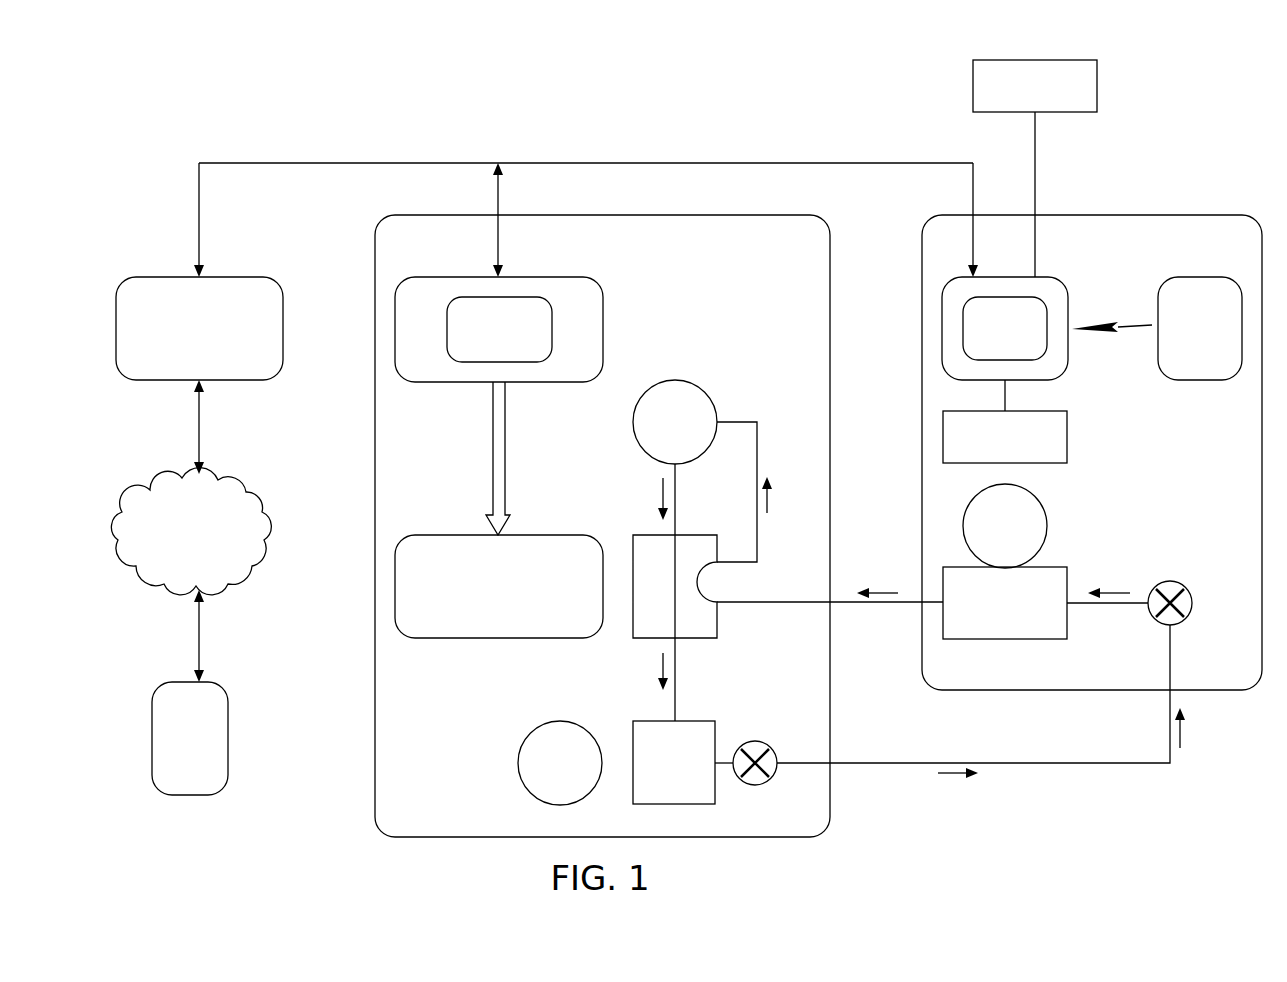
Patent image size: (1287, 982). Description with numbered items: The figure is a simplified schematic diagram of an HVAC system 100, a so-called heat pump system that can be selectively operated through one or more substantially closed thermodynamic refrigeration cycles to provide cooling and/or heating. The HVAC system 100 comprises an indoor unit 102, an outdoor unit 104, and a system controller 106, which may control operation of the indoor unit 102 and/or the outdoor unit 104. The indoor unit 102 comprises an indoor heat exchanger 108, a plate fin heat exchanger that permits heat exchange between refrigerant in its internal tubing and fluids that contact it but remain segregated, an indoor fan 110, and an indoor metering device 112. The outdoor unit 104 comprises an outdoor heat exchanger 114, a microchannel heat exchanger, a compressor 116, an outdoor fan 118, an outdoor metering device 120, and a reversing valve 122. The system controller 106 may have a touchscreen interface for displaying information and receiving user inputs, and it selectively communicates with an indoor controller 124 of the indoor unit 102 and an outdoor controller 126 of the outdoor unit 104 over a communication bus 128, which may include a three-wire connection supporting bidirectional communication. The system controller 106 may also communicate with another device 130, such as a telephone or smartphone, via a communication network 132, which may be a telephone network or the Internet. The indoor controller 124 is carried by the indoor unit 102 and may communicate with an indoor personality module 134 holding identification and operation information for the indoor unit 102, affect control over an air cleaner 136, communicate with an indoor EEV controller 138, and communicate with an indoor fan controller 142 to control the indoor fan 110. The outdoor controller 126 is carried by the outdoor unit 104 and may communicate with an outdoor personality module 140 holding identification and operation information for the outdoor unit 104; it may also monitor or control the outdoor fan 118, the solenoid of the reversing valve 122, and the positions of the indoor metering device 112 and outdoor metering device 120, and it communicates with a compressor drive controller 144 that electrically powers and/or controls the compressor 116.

The HVAC system 100 is at (346, 104).
The indoor unit 102 is at (1178, 206).
The outdoor unit 104 is at (366, 270).
The system controller 106 is at (180, 342).
The indoor heat exchanger 108 is at (986, 615).
The indoor fan 110 is at (986, 538).
The indoor metering device 112 is at (1186, 620).
The outdoor heat exchanger 114 is at (655, 775).
The compressor 116 is at (656, 434).
The outdoor fan 118 is at (541, 775).
The outdoor metering device 120 is at (771, 779).
The reversing valve 122 is at (717, 618).
The indoor controller 124 is at (1068, 308).
The outdoor controller 126 is at (448, 276).
The communication bus 128 is at (587, 162).
The other device 130 is at (180, 558).
The communication network 132 is at (171, 784).
The indoor personality module 134 is at (986, 342).
The air cleaner 136 is at (1016, 100).
The indoor EEV controller 138 is at (1181, 342).
The outdoor personality module 140 is at (480, 342).
The indoor fan controller 142 is at (986, 450).
The compressor drive controller 144 is at (480, 599).